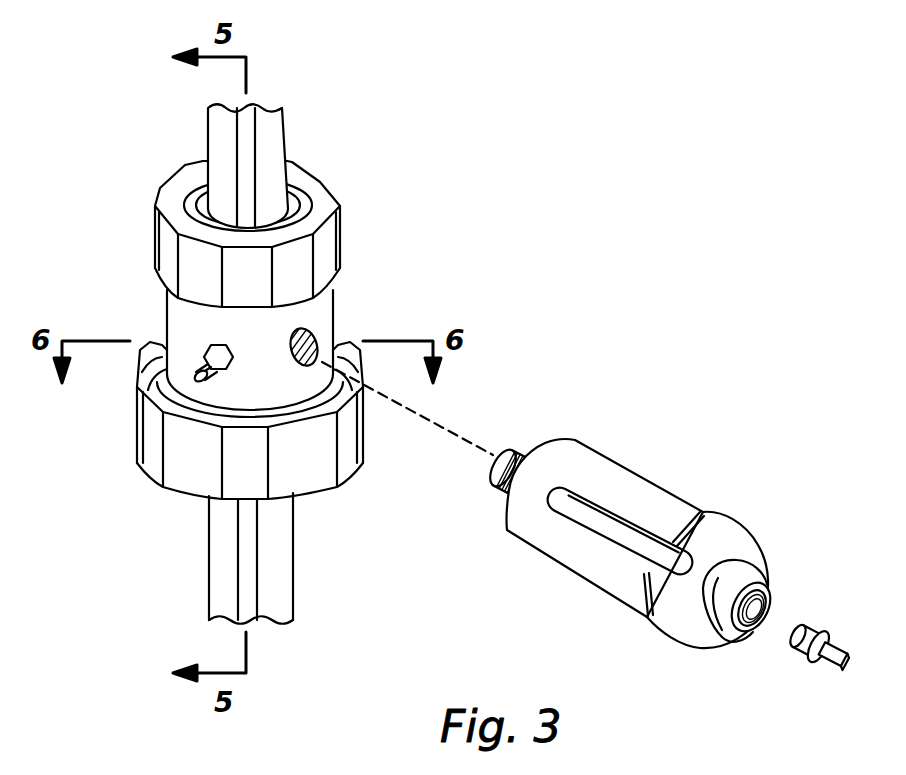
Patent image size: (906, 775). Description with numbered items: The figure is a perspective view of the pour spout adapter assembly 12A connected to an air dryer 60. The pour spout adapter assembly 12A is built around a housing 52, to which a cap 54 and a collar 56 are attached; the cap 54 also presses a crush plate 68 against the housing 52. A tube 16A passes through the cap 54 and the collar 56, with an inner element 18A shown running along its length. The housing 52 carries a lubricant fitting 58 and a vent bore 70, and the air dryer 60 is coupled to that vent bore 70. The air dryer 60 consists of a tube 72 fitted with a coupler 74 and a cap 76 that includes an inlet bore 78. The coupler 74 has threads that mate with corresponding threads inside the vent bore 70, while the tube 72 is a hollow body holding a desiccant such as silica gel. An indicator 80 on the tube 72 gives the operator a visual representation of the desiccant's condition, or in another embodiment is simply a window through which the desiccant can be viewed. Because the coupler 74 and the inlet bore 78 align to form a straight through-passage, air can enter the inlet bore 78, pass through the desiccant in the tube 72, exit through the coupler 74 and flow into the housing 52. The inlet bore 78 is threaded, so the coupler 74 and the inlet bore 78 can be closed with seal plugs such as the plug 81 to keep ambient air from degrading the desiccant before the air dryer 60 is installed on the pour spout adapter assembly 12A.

The pour spout adapter assembly 12A is at (303, 351).
The tube 16A is at (242, 351).
The inner conduit 18A is at (245, 133).
The housing 52 is at (180, 313).
The cap 54 is at (287, 218).
The collar 56 is at (302, 476).
The lubricant fitting 58 is at (203, 380).
The air dryer 60 is at (666, 500).
The crush plate 68 is at (297, 204).
The vent bore 70 is at (318, 336).
The tube 72 is at (667, 503).
The coupler 74 is at (522, 448).
The cap 76 is at (740, 538).
The inlet bore 78 is at (770, 610).
The indicator 80 is at (617, 532).
The plug 81 is at (803, 648).